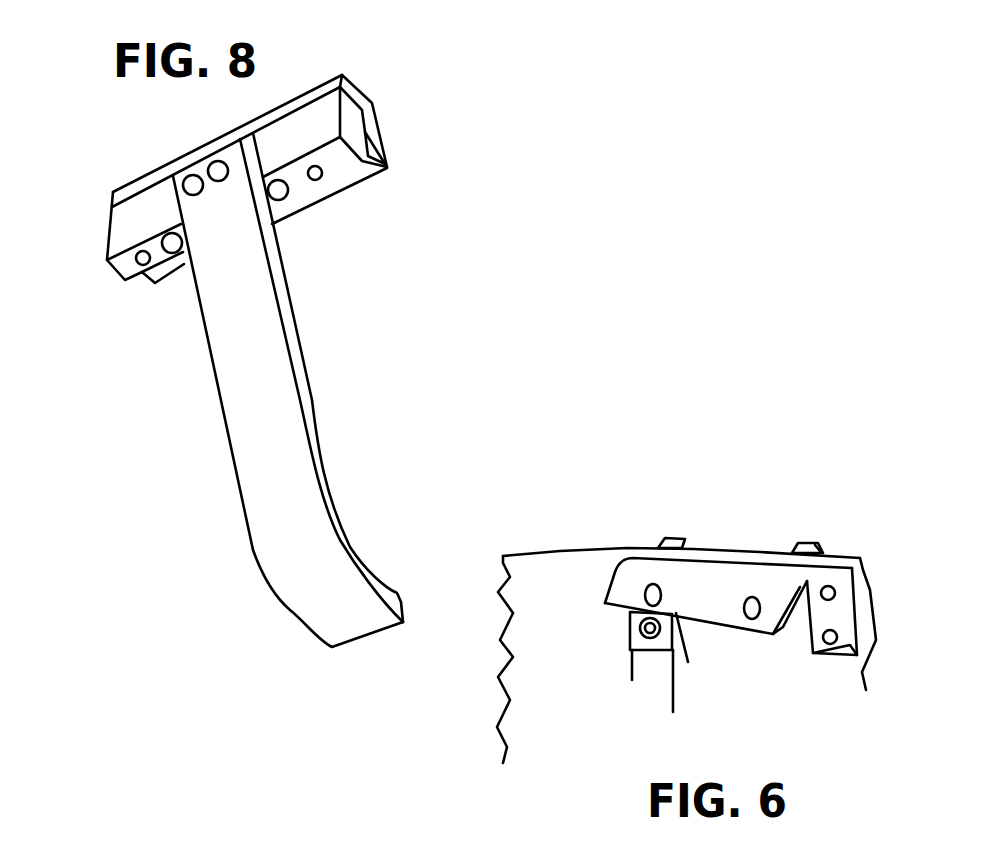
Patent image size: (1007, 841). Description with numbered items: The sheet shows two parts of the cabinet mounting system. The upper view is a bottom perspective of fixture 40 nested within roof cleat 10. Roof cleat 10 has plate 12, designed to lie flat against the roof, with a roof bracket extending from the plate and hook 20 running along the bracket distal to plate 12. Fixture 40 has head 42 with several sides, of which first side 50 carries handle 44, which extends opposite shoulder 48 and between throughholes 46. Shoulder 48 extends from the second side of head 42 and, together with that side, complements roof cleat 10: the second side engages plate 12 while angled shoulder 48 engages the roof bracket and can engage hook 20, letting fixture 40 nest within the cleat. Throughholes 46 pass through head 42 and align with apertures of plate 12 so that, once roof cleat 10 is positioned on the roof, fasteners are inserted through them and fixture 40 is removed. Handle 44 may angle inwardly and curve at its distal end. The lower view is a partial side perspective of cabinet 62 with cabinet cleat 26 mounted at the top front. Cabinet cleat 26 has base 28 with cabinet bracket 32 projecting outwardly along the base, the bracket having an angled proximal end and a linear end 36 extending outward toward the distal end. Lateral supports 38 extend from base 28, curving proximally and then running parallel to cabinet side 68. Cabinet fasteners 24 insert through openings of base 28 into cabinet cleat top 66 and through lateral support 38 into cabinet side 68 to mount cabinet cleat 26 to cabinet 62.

In FIG. 8, the roof cleat 10 is at (154, 172).
In FIG. 8, the plate 12 is at (341, 74).
In FIG. 8, the hook 20 is at (344, 186).
In FIG. 6, the cabinet fasteners 24 is at (660, 544).
In FIG. 6, the cabinet cleat 26 is at (715, 568).
In FIG. 6, the base 28 is at (766, 562).
In FIG. 6, the cabinet bracket 32 is at (727, 612).
In FIG. 6, the linear end 36 is at (753, 634).
In FIG. 6, the lateral supports 38 is at (628, 636).
In FIG. 8, the fixture 40 is at (241, 418).
In FIG. 8, the head 42 is at (105, 247).
In FIG. 8, the handle 44 is at (309, 377).
In FIG. 8, the throughholes 46 is at (176, 255).
In FIG. 8, the shoulder 48 is at (366, 132).
In FIG. 8, the first side 50 is at (289, 139).
In FIG. 6, the cabinet 62 is at (539, 587).
In FIG. 6, the cabinet cleat top 66 is at (738, 552).
In FIG. 6, the cabinet side 68 is at (673, 712).